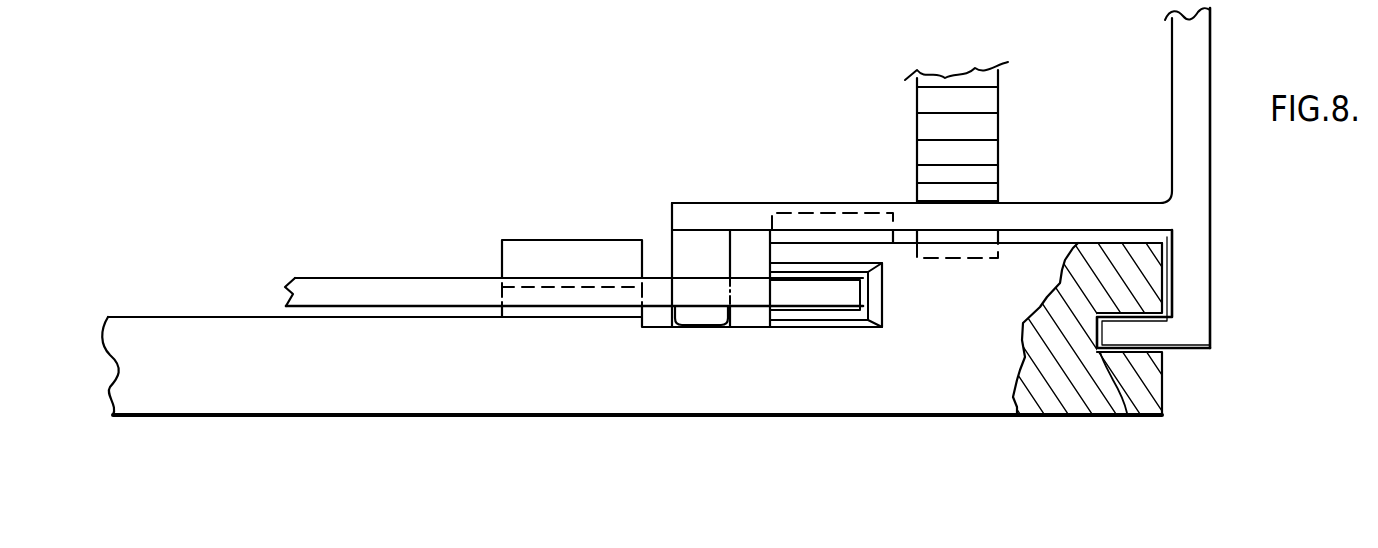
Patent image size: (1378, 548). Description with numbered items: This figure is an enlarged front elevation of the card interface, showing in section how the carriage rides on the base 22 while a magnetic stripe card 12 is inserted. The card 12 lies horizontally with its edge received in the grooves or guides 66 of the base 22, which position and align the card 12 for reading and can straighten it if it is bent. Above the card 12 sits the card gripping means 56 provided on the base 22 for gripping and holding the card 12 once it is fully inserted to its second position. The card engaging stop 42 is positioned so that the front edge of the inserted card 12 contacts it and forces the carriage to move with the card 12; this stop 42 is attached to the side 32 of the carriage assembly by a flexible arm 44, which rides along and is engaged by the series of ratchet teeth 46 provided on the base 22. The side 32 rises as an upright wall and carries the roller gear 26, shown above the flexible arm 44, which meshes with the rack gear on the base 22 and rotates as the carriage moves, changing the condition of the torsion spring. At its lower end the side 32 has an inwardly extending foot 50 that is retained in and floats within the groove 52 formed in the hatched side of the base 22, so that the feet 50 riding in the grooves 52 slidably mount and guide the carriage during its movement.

The magnetic stripe card 12 is at (357, 290).
The base 22 is at (972, 378).
The roller gear 26 is at (955, 78).
The side 32 is at (1186, 42).
The stop 42 is at (682, 249).
The flexible arm 44 is at (734, 214).
The ratchet teeth 46 is at (807, 238).
The feet 50 is at (1148, 338).
The groove 52 is at (1118, 388).
The card gripping means 56 is at (520, 250).
The grooves or guides 66 is at (830, 317).